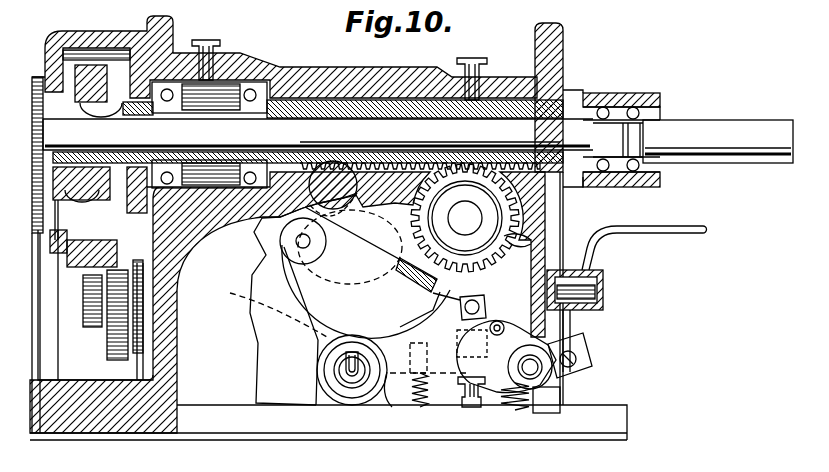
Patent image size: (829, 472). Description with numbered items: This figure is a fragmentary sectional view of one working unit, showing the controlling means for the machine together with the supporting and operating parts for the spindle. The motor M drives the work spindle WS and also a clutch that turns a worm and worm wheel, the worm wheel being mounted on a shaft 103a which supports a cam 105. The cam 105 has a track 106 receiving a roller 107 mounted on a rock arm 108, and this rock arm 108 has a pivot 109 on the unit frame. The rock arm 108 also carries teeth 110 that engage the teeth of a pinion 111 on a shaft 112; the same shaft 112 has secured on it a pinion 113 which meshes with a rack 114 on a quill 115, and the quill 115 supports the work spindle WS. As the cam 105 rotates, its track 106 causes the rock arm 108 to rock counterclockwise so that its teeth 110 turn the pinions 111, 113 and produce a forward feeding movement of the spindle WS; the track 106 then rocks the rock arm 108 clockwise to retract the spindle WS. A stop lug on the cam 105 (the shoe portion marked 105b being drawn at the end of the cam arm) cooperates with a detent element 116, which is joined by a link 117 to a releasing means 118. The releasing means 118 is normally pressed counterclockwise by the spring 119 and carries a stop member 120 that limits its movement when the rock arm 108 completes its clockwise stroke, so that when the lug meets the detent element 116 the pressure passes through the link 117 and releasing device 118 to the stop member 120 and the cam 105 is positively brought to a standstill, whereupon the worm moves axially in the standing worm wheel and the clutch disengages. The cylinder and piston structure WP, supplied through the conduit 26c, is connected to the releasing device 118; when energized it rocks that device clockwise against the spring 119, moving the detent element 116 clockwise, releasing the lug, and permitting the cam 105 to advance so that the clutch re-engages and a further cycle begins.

The motor M is at (55, 262).
The work spindle WS is at (703, 123).
The cylinder and piston structure WP is at (603, 287).
The conduit 26c is at (660, 221).
The shaft 103a is at (357, 208).
The cam 105 is at (248, 295).
The lever shoe 105b is at (418, 277).
The track 106 is at (352, 277).
The roller 107 is at (290, 241).
The rock arm 108 is at (323, 337).
The pivot 109 is at (347, 382).
The teeth 110 is at (452, 281).
The pinion 111 is at (513, 241).
The shaft 112 is at (465, 218).
The pinion 113 is at (480, 178).
The rack 114 is at (374, 167).
The quill 115 is at (485, 113).
The detent element 116 is at (403, 392).
The link 117 is at (487, 317).
The releasing means 118 is at (583, 348).
The spring 119 is at (520, 402).
The stop member 120 is at (470, 408).